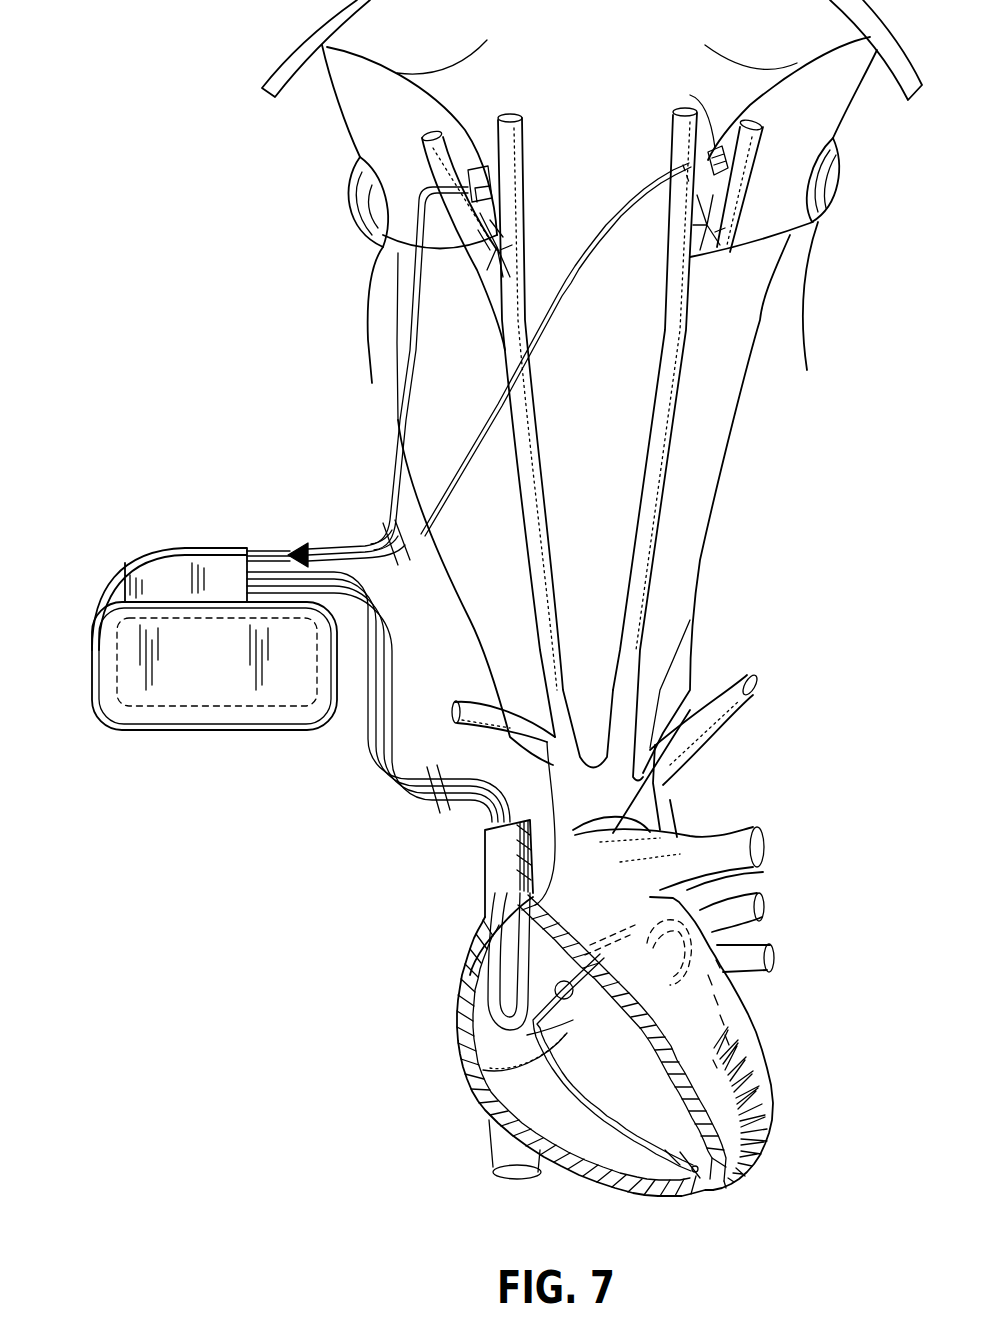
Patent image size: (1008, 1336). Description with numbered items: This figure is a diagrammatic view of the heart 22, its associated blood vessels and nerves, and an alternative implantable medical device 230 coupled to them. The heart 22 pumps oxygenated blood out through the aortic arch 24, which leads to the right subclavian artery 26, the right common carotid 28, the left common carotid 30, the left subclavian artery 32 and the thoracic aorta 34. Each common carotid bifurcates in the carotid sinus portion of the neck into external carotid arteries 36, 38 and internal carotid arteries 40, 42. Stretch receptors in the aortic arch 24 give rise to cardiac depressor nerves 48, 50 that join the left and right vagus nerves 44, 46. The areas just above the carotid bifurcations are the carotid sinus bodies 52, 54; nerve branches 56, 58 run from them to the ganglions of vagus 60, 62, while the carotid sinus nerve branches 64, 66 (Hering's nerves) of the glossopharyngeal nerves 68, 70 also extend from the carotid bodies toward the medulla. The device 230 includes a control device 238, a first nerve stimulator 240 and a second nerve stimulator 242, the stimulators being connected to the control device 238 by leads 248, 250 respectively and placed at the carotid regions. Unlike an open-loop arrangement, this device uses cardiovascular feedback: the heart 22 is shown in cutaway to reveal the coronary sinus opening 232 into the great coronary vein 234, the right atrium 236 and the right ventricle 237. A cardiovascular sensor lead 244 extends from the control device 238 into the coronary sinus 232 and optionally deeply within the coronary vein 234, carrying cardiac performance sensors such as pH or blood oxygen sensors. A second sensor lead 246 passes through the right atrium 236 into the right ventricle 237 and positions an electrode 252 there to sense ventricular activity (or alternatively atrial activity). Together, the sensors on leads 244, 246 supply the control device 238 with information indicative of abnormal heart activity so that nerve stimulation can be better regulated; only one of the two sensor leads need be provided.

The heart 22 is at (737, 1073).
The aortic arch 24 is at (650, 830).
The right subclavian artery 26 is at (473, 707).
The right common carotid 28 is at (505, 283).
The left common carotid 30 is at (683, 247).
The left subclavian artery 32 is at (725, 713).
The thoracic aorta 34 is at (677, 812).
The external carotid artery 36 is at (423, 167).
The external carotid artery 38 is at (760, 153).
The internal carotid artery 40 is at (522, 157).
The internal carotid artery 42 is at (673, 140).
The left vagus nerve 44 is at (370, 337).
The right vagus nerve 46 is at (800, 330).
The cardiac depressor nerve 48 is at (440, 560).
The cardiac depressor nerve 50 is at (708, 520).
The carotid sinus body 52 is at (492, 242).
The carotid sinus body 54 is at (690, 207).
The nerve branch 56 is at (446, 255).
The nerve branch 58 is at (750, 250).
The ganglion of vagus 60 is at (350, 213).
The ganglion of vagus 62 is at (837, 187).
The carotid sinus nerve branch 64 is at (450, 118).
The carotid sinus nerve branch 66 is at (724, 143).
The glossopharyngeal nerve 68 is at (449, 67).
The glossopharyngeal nerve 70 is at (750, 63).
The implantable medical device 230 is at (277, 671).
The coronary sinus opening 232 is at (556, 985).
The great coronary vein 234 is at (753, 878).
The right atrium 236 is at (497, 1035).
The right ventricle 237 is at (600, 1150).
The control device 238 is at (260, 717).
The first nerve stimulator 240 is at (480, 168).
The second nerve stimulator 242 is at (683, 132).
The cardiovascular sensor lead 244 is at (490, 983).
The cardiovascular sensor lead 246 is at (592, 1112).
The lead 248 is at (392, 468).
The lead 250 is at (480, 433).
The electrode 252 is at (707, 1177).